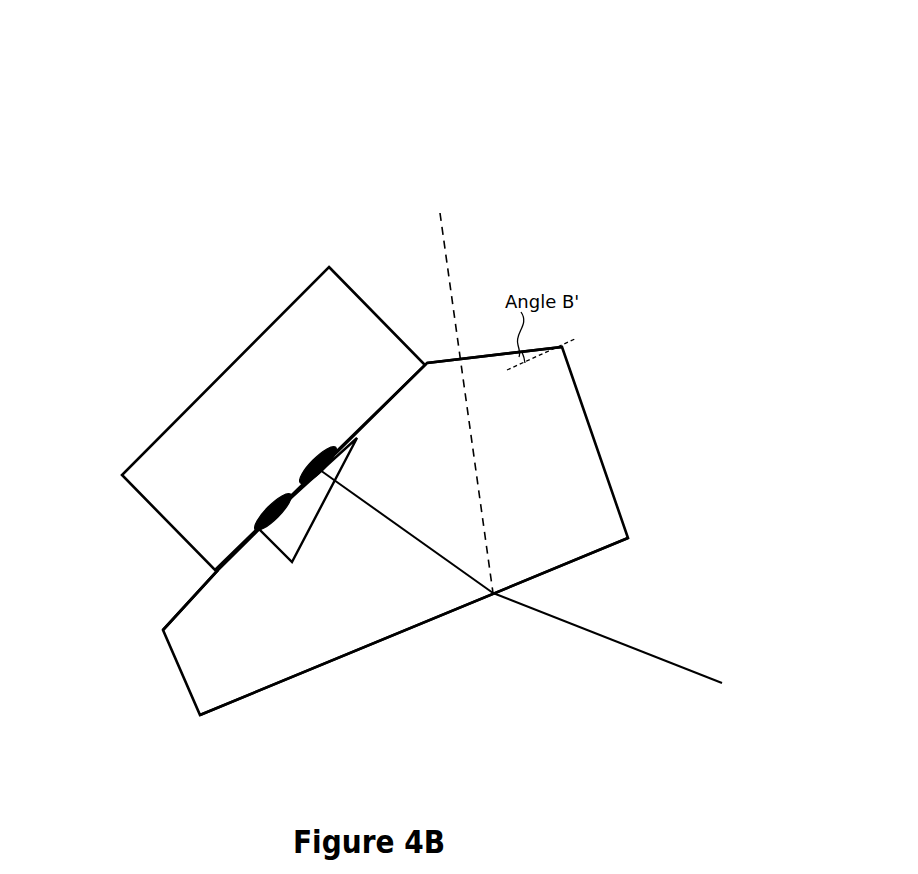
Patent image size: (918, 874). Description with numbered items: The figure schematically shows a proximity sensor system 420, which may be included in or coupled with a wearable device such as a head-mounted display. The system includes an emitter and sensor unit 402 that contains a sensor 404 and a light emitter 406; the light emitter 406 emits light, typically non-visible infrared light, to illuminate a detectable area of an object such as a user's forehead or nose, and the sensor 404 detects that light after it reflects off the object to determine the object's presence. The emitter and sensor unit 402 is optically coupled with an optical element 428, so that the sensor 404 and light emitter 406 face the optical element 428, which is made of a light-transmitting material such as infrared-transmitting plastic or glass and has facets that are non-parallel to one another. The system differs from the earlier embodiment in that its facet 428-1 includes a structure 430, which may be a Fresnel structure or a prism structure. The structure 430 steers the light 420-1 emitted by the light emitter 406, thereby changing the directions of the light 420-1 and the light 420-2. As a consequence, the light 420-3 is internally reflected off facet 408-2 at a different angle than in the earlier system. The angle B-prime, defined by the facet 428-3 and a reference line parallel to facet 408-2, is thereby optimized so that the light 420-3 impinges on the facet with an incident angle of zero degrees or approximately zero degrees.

The proximity sensor system 420 is at (178, 82).
The emitter and sensor unit 402 is at (354, 360).
The sensor 404 is at (266, 506).
The light emitter 406 is at (312, 459).
The optical element 428 is at (234, 662).
The facet 428-1 is at (197, 590).
The facet 428-3 is at (433, 363).
The facet 408-2 is at (215, 711).
The structure 430 is at (316, 516).
The light 420-1 is at (378, 510).
The light 420-2 is at (618, 641).
The light 420-3 is at (443, 247).